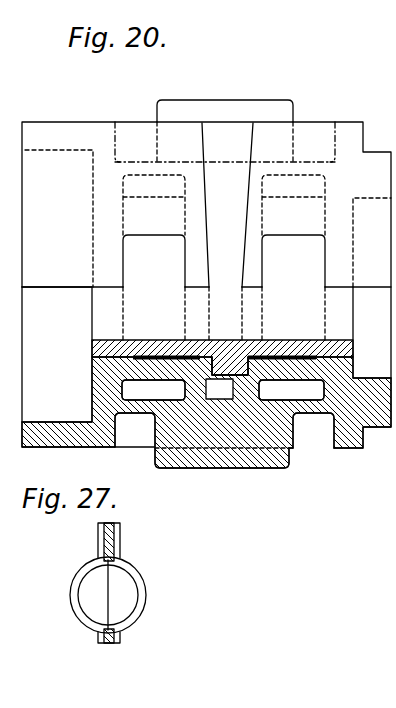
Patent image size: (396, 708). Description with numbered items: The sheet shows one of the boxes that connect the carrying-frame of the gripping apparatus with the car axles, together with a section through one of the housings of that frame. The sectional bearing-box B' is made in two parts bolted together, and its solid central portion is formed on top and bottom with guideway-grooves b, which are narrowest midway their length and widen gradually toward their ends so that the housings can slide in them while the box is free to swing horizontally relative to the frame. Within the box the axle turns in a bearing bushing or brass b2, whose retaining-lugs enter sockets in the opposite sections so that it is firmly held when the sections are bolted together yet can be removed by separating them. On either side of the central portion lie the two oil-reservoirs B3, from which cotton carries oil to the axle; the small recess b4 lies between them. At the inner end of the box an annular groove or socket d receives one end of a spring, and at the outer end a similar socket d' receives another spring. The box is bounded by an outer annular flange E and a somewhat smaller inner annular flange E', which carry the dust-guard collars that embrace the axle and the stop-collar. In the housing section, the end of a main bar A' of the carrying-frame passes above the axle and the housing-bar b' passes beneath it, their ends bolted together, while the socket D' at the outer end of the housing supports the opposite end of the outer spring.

In FIG. 20, the guideway-groove b is at (225, 193).
In FIG. 20, the socket d' is at (314, 117).
In FIG. 20, the sectional bearing-box B' is at (209, 231).
In FIG. 20, the bearing bushing or brass b2 is at (224, 313).
In FIG. 20, the outer annular flange E is at (57, 354).
In FIG. 20, the inner annular flange E' is at (372, 332).
In FIG. 20, the oil-reservoir B3 is at (223, 390).
In FIG. 20, the central recess b4 is at (228, 377).
In FIG. 20, the annular groove or socket d is at (224, 430).
In FIG. 27, the main bar A' is at (97, 542).
In FIG. 27, the socket D' is at (108, 595).
In FIG. 27, the housing-bar b' is at (119, 638).